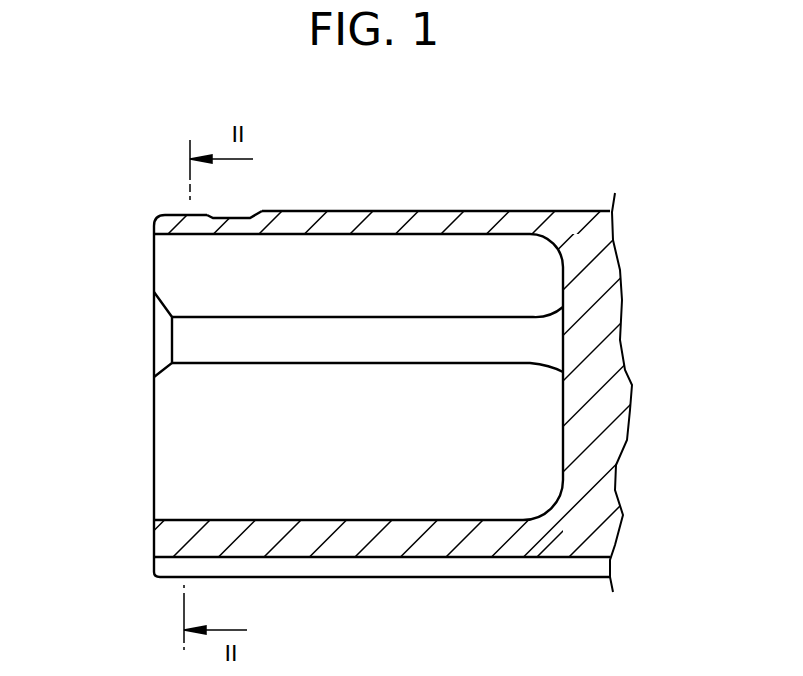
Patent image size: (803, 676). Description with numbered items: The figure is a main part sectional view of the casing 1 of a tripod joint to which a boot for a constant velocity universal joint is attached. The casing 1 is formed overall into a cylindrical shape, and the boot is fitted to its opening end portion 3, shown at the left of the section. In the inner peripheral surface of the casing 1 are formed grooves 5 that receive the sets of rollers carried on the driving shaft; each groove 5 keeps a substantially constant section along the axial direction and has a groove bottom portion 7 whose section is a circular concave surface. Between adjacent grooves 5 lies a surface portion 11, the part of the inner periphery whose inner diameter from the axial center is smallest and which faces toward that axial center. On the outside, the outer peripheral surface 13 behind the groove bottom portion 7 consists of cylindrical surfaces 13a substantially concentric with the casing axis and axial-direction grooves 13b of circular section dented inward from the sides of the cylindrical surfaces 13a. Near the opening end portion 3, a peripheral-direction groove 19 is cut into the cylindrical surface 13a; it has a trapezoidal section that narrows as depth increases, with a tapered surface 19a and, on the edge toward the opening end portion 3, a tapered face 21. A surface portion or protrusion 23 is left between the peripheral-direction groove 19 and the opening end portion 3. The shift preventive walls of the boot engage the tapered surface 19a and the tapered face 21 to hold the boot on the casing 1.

The casing 1 is at (472, 193).
The opening end portion 3 is at (153, 252).
The groove 5 is at (533, 275).
The groove bottom portion 7 is at (570, 213).
The surface portion 11 is at (532, 338).
The outer peripheral surface 13 is at (388, 212).
The cylindrical surface 13a is at (352, 212).
The axial-direction groove 13b is at (362, 565).
The peripheral-direction groove 19 is at (240, 217).
The tapered surface 19a is at (215, 218).
The tapered face 21 is at (160, 217).
The surface portion (protrusion) 23 is at (183, 212).